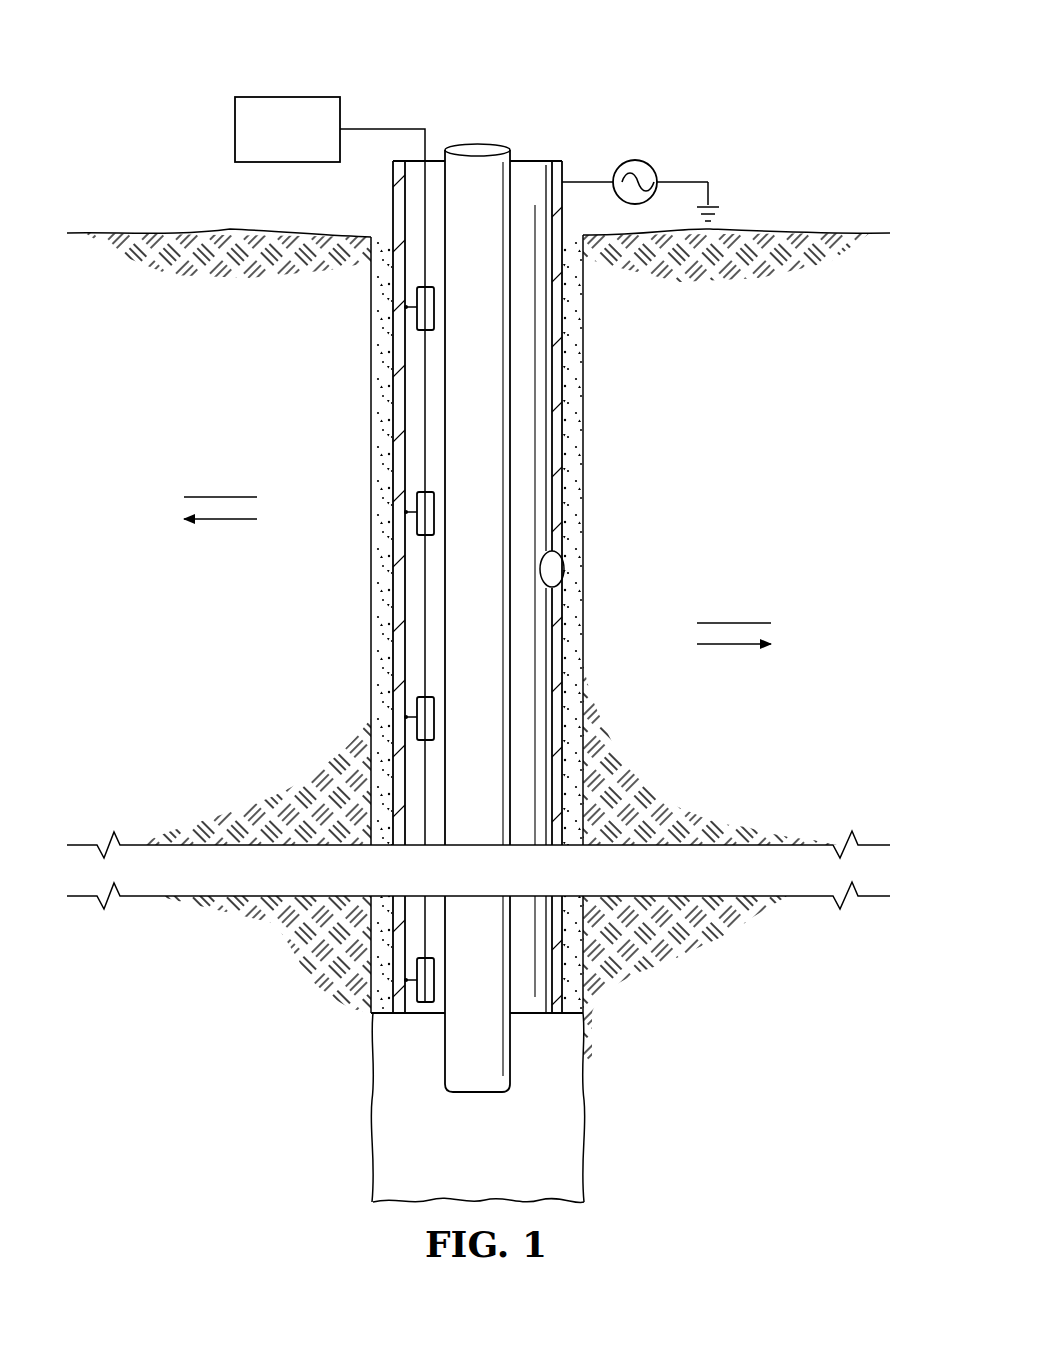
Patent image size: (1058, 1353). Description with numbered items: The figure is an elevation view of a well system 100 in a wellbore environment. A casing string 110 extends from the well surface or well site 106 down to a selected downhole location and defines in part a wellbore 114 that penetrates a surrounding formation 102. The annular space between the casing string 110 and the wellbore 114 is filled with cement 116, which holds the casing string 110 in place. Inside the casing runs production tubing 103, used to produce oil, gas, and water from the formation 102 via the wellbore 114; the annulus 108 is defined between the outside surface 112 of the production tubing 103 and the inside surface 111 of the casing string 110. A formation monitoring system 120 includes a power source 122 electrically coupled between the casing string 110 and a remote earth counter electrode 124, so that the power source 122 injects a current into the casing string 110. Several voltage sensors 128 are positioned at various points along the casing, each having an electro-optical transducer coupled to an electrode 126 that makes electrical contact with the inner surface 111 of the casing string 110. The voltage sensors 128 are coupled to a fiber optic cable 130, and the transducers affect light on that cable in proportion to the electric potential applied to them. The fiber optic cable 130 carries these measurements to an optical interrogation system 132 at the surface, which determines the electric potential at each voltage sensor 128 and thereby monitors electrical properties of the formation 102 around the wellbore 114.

The well system 100 is at (565, 67).
The formation 102 is at (717, 555).
The production tubing 103 is at (485, 378).
The well surface or well site 106 is at (452, 555).
The annulus 108 is at (533, 316).
The casing string 110 is at (395, 388).
The inside surface of casing string 111 is at (562, 581).
The outside surface of production tubing 112 is at (443, 1040).
The wellbore 114 is at (290, 618).
The cement 116 is at (577, 477).
The formation monitoring system 120 is at (262, 174).
The power source 122 is at (637, 160).
The remote earth counter electrode 124 is at (722, 213).
The electrode 126 is at (393, 522).
The voltage sensor 128 is at (417, 297).
The fiber optic cable 130 is at (383, 128).
The optical interrogation system 132 is at (269, 145).